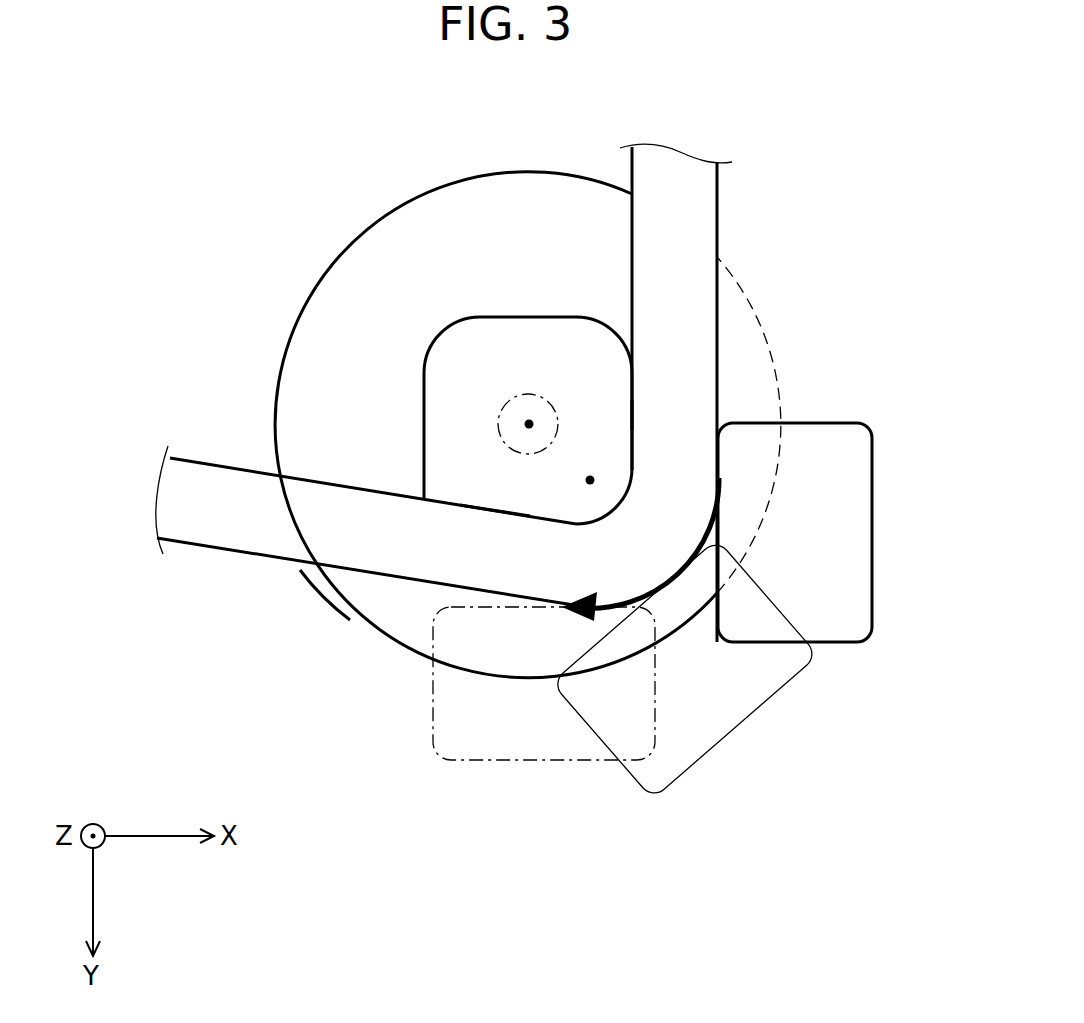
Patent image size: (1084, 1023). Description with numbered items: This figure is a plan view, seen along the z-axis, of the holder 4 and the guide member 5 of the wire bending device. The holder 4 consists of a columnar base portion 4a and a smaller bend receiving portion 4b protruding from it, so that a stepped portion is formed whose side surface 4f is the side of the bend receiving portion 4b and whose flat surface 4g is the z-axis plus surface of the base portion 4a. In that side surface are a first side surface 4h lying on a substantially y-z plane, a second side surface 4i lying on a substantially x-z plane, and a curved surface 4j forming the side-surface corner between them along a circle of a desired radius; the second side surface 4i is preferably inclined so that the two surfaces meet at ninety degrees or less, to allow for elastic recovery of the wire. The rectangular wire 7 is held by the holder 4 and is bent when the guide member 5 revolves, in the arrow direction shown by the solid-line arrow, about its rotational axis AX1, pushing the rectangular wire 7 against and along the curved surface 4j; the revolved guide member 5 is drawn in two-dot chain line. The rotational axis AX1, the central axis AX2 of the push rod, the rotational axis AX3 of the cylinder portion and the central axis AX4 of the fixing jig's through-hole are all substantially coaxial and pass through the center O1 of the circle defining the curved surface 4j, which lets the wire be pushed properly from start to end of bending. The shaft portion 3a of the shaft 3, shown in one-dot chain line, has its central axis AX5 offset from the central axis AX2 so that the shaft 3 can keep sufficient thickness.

The shaft 3 is at (515, 268).
The shaft portion 3a is at (530, 394).
The holder 4 is at (300, 257).
The base portion 4a is at (258, 594).
The bend receiving portion 4b is at (428, 303).
The side surface 4f is at (572, 312).
The flat surface 4g is at (350, 583).
The first side surface 4h is at (632, 413).
The second side surface 4i is at (493, 511).
The curved surface 4j is at (612, 513).
The guide member 5 is at (855, 483).
The rectangular wire 7 is at (705, 207).
The central axis of the shaft AX5 is at (525, 430).
The rotational axis of the guide member AX1 is at (576, 680).
The central axis of the push rod AX2 is at (576, 680).
The rotational axis of the cylinder portion AX3 is at (576, 680).
The central axis of the through-hole of the fixing jig AX4 is at (576, 680).
The center of the circle defining the curved surface O1 is at (588, 488).